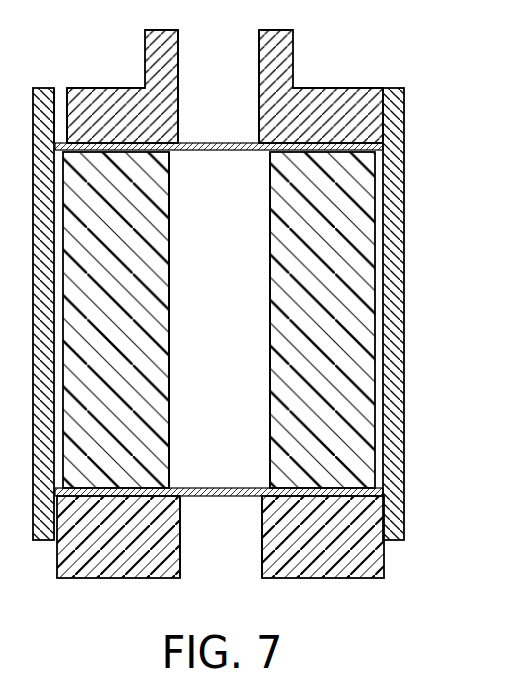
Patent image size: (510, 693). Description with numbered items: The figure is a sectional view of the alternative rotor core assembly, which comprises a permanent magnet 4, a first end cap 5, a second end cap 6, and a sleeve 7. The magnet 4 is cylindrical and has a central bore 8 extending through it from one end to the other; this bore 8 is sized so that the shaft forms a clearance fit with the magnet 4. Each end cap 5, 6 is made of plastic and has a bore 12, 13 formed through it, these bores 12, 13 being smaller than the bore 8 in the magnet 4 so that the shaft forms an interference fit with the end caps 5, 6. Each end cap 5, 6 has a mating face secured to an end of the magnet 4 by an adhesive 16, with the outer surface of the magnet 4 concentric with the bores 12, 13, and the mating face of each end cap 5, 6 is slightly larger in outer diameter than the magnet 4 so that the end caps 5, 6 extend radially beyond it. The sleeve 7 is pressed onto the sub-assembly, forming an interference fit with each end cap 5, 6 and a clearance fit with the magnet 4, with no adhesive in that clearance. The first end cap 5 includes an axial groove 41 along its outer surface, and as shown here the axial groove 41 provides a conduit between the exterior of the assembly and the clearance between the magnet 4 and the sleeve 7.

The permanent magnet 4 is at (358, 283).
The first end cap 5 is at (330, 87).
The second end cap 6 is at (337, 580).
The sleeve 7 is at (405, 393).
The central bore 8 is at (171, 318).
The bore 12 is at (178, 84).
The bore 13 is at (181, 536).
The adhesive 16 is at (113, 497).
The axial groove 41 is at (58, 87).